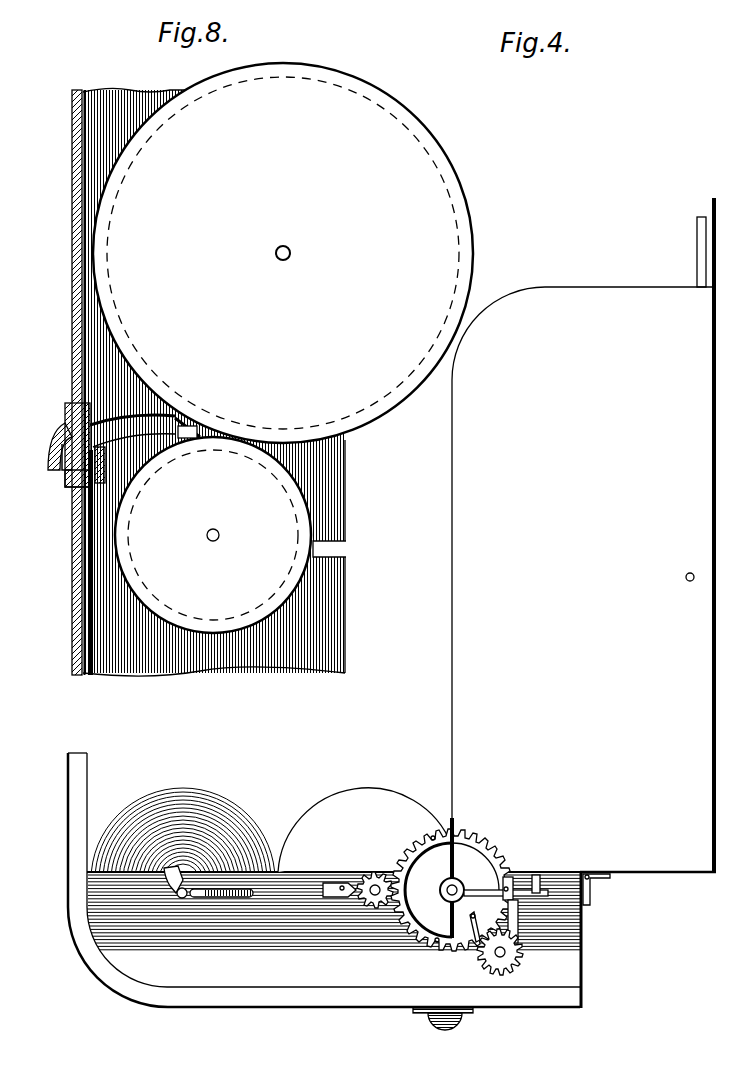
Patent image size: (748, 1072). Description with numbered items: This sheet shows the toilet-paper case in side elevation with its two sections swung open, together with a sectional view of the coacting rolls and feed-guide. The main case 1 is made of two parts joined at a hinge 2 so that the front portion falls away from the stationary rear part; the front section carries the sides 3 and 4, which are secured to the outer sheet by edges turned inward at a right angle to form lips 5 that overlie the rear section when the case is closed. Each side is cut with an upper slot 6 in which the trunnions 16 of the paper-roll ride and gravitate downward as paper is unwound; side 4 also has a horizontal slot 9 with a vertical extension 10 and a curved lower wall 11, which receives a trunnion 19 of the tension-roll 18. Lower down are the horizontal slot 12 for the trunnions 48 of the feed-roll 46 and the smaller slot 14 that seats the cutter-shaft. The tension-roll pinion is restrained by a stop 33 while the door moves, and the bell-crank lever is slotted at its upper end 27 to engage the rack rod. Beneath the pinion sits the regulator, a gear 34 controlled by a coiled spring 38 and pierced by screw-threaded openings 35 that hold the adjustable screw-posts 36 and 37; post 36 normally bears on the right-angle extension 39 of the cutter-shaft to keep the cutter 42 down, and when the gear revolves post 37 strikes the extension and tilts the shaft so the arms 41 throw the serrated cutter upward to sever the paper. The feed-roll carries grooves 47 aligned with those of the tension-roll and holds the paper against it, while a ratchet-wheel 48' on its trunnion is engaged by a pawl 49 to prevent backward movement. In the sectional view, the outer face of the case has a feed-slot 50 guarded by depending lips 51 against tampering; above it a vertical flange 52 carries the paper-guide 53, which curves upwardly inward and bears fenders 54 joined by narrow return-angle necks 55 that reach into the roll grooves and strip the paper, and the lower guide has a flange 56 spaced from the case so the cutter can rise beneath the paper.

In FIG. 4, the main case 1 is at (584, 568).
In FIG. 4, the hinge 2 is at (594, 881).
In FIG. 4, the side 3 is at (333, 911).
In FIG. 8, the side 4 is at (345, 490).
In FIG. 4, the lips 5 is at (272, 1000).
In FIG. 4, the upper slot 6 is at (222, 898).
In FIG. 8, the horizontal slot 9 is at (346, 551).
In FIG. 4, the vertical extension 10 is at (84, 791).
In FIG. 4, the curved part 11 is at (172, 890).
In FIG. 4, the horizontal slot 12 is at (518, 928).
In FIG. 4, the horizontal slot 14 is at (540, 878).
In FIG. 4, the trunnions 16 is at (182, 898).
In FIG. 8, the tension-roll 18 is at (283, 253).
In FIG. 4, the tension-roll 18 is at (365, 830).
In FIG. 8, the trunnions 19 is at (290, 247).
In FIG. 4, the trunnions 19 is at (378, 884).
In FIG. 4, the slotted upper end 27 is at (372, 900).
In FIG. 4, the stop 33 is at (333, 882).
In FIG. 4, the gear 34 is at (456, 836).
In FIG. 4, the screw-threaded openings 35 is at (437, 946).
In FIG. 4, the screw-post 36 is at (512, 880).
In FIG. 4, the screw-post 37 is at (378, 908).
In FIG. 4, the coiled spring 38 is at (444, 900).
In FIG. 4, the right-angle extension 39 is at (525, 897).
In FIG. 4, the arms 41 is at (699, 249).
In FIG. 8, the cutter 42 is at (73, 593).
In FIG. 8, the feed-roll 46 is at (213, 535).
In FIG. 8, the grooves 47 is at (190, 621).
In FIG. 4, the trunnions 48 is at (491, 956).
In FIG. 8, the ratchet-wheel 48' is at (229, 535).
In FIG. 4, the ratchet-wheel 48' is at (526, 962).
In FIG. 4, the pawl 49 is at (474, 930).
In FIG. 8, the feed-slot 50 is at (52, 447).
In FIG. 8, the depending lips 51 is at (60, 468).
In FIG. 4, the depending lips 51 is at (446, 1028).
In FIG. 8, the vertical flange 52 is at (65, 411).
In FIG. 8, the paper-guide 53 is at (160, 418).
In FIG. 8, the fenders 54 is at (205, 432).
In FIG. 8, the necks 55 is at (190, 424).
In FIG. 8, the flange 56 is at (72, 482).